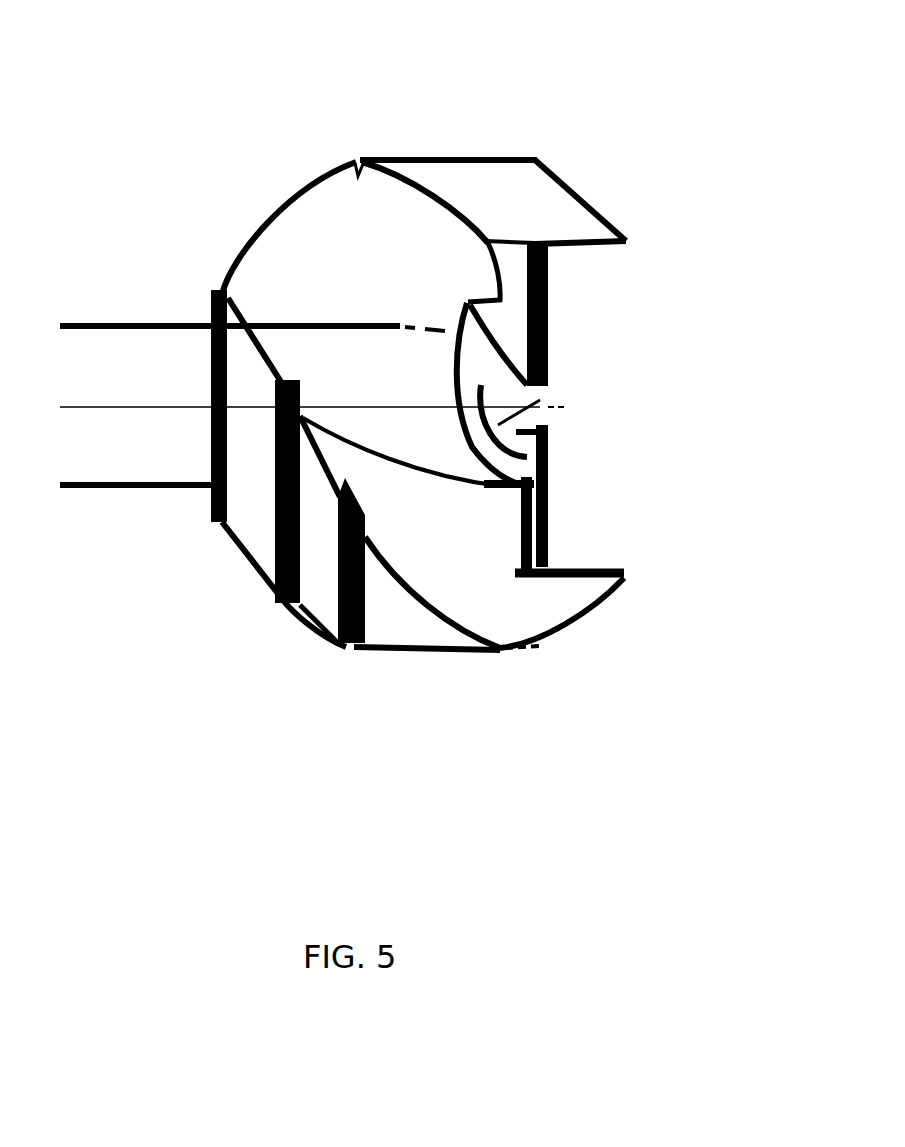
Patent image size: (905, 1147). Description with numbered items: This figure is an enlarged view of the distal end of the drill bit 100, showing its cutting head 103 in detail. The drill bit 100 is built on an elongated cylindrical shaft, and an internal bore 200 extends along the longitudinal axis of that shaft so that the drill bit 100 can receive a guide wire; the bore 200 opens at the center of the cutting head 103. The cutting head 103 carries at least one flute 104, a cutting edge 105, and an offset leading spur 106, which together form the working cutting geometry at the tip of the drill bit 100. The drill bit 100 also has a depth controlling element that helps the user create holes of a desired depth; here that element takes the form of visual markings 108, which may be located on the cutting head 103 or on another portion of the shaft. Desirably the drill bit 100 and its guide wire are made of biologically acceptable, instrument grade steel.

The drill bit 100 is at (154, 128).
The cutting head 103 is at (478, 124).
The flute 104 is at (494, 613).
The cutting edge 105 is at (548, 330).
The offset leading spur 106 is at (628, 240).
The visual markings 108 is at (278, 605).
The internal bore 200 is at (498, 427).